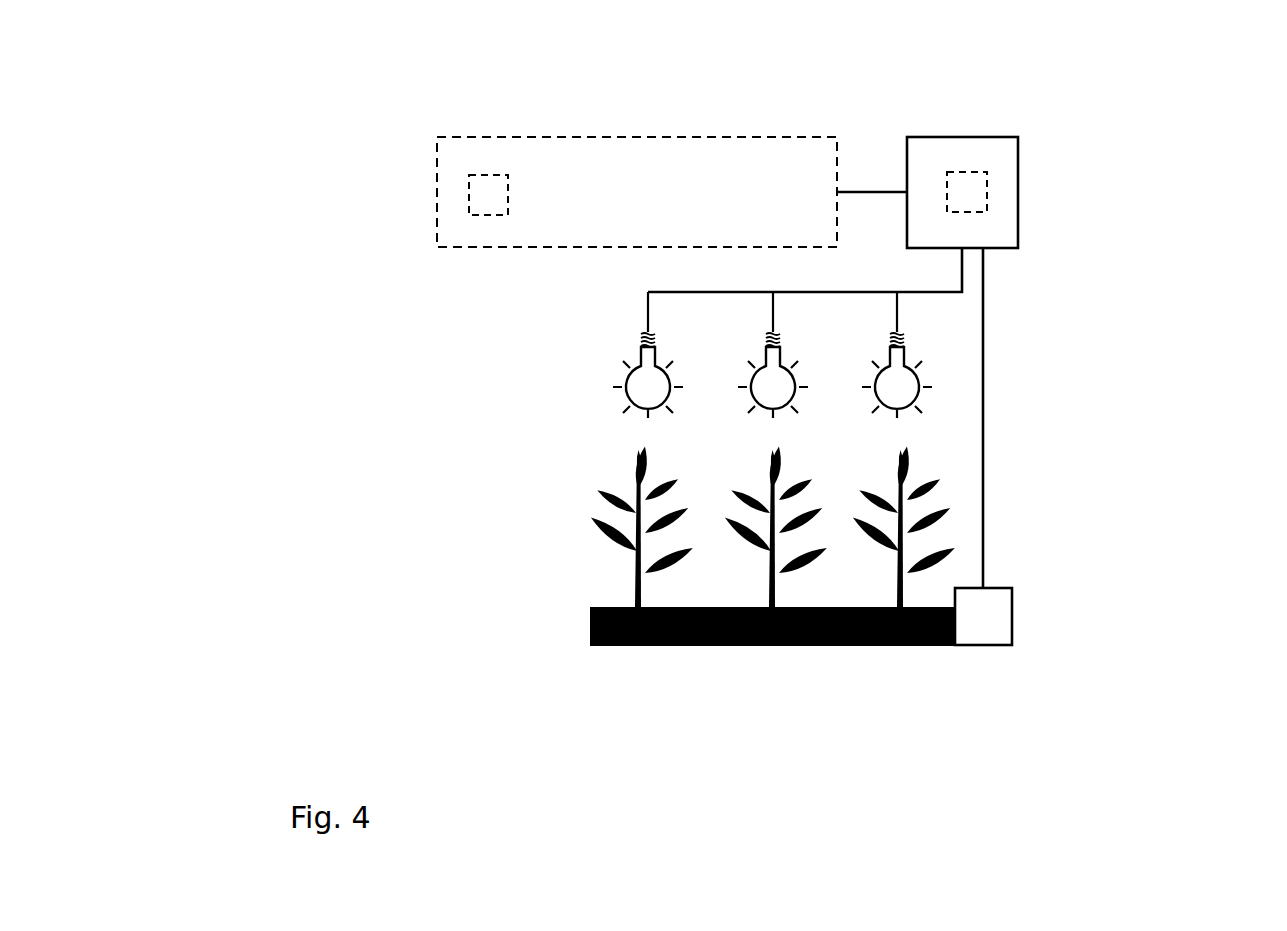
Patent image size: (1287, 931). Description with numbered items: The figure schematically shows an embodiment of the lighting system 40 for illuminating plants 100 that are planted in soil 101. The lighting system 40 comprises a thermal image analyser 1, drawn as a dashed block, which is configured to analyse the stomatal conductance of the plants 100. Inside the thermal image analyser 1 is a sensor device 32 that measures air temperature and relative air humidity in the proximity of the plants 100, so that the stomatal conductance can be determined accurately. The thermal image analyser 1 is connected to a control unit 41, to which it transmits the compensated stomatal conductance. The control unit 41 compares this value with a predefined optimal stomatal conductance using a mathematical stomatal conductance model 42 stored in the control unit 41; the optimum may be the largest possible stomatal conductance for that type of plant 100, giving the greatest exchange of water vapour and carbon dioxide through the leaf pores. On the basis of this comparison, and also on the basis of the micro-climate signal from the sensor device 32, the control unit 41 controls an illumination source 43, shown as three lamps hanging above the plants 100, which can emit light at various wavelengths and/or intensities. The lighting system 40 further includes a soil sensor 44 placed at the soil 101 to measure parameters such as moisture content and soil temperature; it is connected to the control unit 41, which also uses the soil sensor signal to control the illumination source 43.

The thermal image analyser 1 is at (637, 137).
The sensor device 32 is at (488, 175).
The lighting system 40 is at (1174, 192).
The control unit 41 is at (963, 137).
The mathematical stomatal conductance model 42 is at (967, 172).
The illumination source 43 is at (925, 383).
The soil sensor 44 is at (1013, 617).
The plants 100 is at (937, 488).
The soil 101 is at (773, 646).